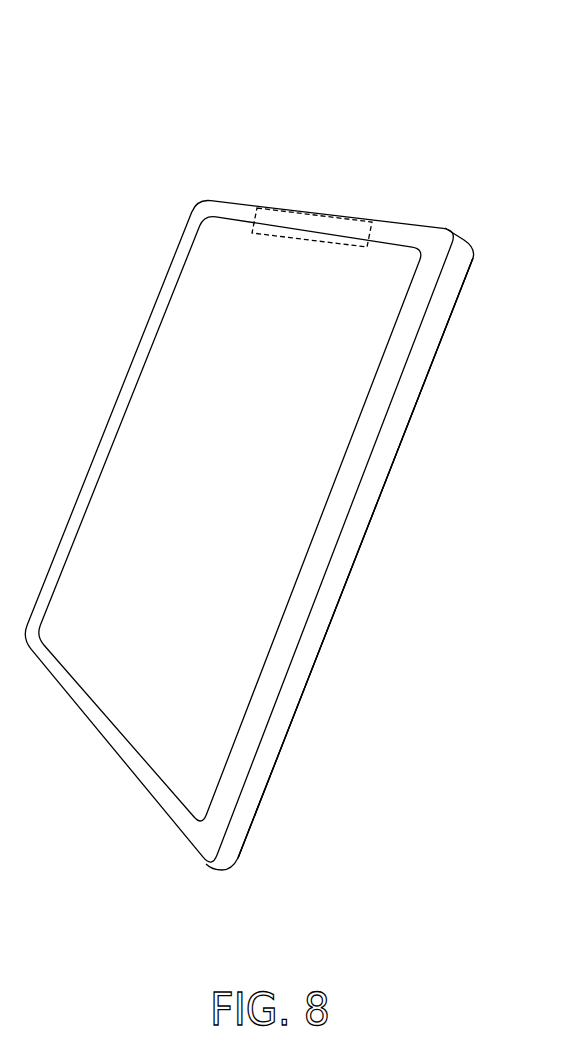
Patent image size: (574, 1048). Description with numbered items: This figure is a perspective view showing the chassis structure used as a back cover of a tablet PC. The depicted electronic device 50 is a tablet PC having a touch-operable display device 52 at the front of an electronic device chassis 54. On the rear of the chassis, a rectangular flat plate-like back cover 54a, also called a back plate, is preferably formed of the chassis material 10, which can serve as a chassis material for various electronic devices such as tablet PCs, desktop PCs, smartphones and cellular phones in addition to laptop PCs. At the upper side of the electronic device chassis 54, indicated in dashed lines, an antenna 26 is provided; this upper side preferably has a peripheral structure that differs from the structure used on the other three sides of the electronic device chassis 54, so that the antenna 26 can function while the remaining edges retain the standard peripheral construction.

The electronic device 50 is at (136, 167).
The antenna 26 is at (388, 221).
The display device 52 is at (325, 410).
The electronic device chassis 54 is at (302, 692).
The back cover 54a is at (346, 580).
The chassis material 10 is at (355, 558).